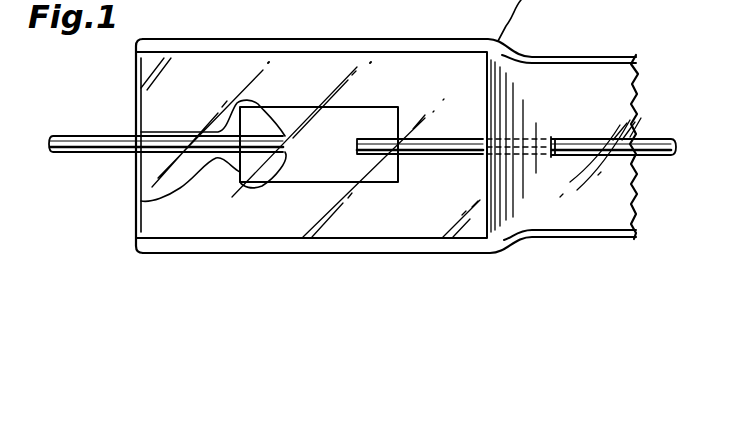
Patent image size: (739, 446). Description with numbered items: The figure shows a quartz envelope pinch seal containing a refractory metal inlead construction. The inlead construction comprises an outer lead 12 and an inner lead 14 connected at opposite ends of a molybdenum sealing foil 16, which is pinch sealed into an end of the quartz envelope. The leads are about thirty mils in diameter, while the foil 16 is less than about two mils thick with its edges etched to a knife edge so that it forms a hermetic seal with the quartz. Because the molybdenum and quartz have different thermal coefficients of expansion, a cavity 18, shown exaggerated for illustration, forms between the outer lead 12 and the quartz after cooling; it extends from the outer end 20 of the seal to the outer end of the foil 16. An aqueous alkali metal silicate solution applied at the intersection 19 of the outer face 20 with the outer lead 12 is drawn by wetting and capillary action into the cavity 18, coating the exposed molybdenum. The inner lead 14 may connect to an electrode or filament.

The outer lead 12 is at (70, 135).
The inner lead 14 is at (658, 138).
The molybdenum sealing foil 16 is at (377, 108).
The cavity 18 is at (141, 201).
The intersection 19 is at (134, 163).
The outer end 20 is at (136, 78).